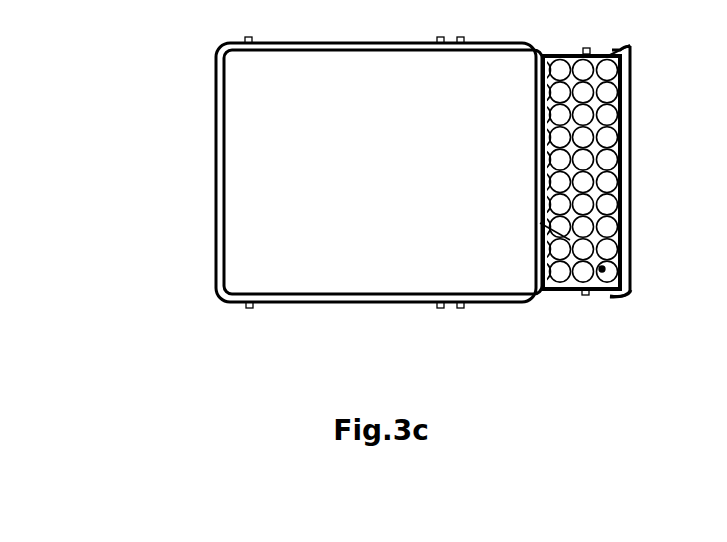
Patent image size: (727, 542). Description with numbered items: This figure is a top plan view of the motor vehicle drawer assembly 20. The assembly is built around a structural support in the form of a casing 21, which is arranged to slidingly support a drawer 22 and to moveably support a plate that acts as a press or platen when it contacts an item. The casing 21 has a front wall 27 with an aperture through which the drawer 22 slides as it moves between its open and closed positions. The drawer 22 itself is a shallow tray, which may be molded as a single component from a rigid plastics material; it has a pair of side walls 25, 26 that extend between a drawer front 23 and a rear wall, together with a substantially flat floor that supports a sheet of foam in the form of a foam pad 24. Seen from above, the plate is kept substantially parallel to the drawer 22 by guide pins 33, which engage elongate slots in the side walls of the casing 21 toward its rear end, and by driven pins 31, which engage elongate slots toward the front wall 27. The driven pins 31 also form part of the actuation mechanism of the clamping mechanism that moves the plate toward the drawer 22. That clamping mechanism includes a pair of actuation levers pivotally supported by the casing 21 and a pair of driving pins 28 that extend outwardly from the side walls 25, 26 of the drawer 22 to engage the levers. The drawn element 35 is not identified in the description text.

The motor vehicle drawer assembly 20 is at (347, 193).
The casing 21 is at (216, 169).
The drawer 22 is at (627, 297).
The drawer front 23 is at (628, 92).
The foam pad 24 is at (602, 270).
The side wall 25 is at (574, 171).
The side wall 26 is at (563, 56).
The front wall 27 is at (570, 240).
The driving pins 28 is at (586, 48).
The driven pins 31 is at (462, 37).
The guide pins 33 is at (247, 37).
The tab 35 is at (440, 37).